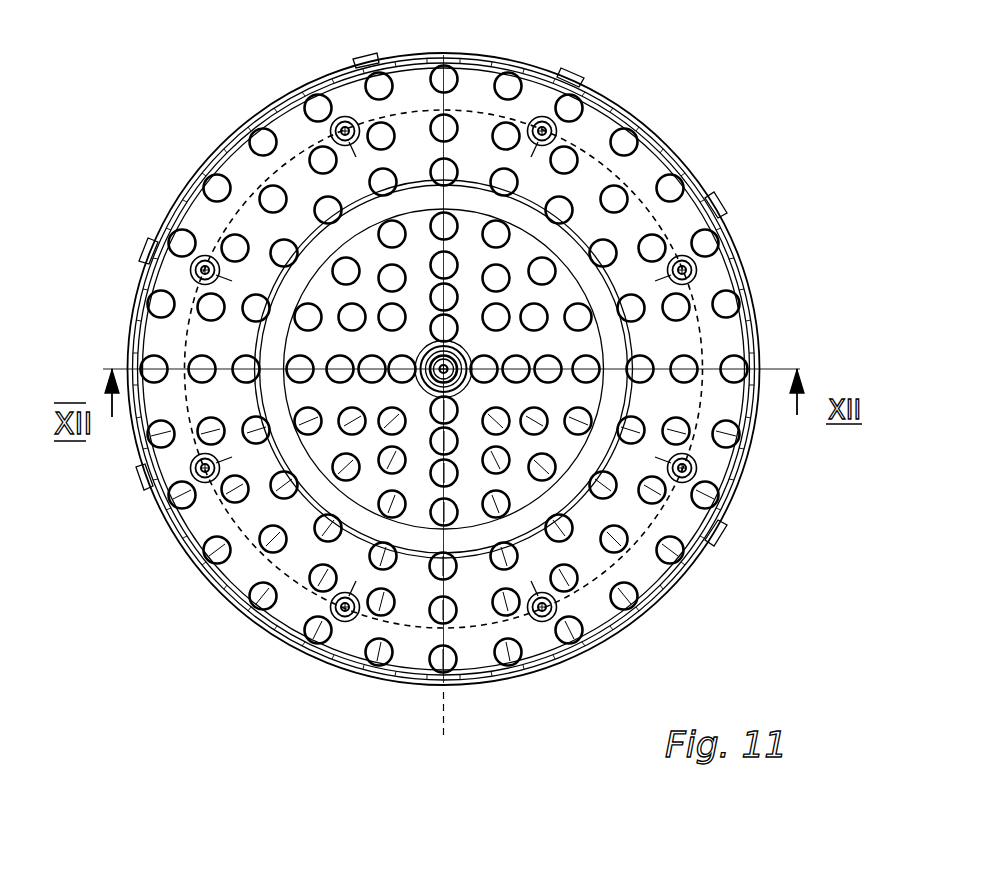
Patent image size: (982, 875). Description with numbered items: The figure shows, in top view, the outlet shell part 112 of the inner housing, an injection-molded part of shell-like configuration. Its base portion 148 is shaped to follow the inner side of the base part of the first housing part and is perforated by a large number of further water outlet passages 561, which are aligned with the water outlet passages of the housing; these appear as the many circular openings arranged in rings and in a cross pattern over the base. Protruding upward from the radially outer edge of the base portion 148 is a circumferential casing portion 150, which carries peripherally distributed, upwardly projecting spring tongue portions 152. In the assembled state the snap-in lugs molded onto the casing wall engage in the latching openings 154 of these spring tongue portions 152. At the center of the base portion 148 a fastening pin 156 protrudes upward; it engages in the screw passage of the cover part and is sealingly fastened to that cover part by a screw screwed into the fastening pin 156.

The outlet shell part 112 is at (571, 77).
The casing portion 150 is at (740, 237).
The water outlet passage 561 is at (646, 133).
The spring tongue portion 152 is at (757, 340).
The latching opening 154 is at (757, 363).
The base portion 148 is at (707, 283).
The fastening pin 156 is at (452, 357).